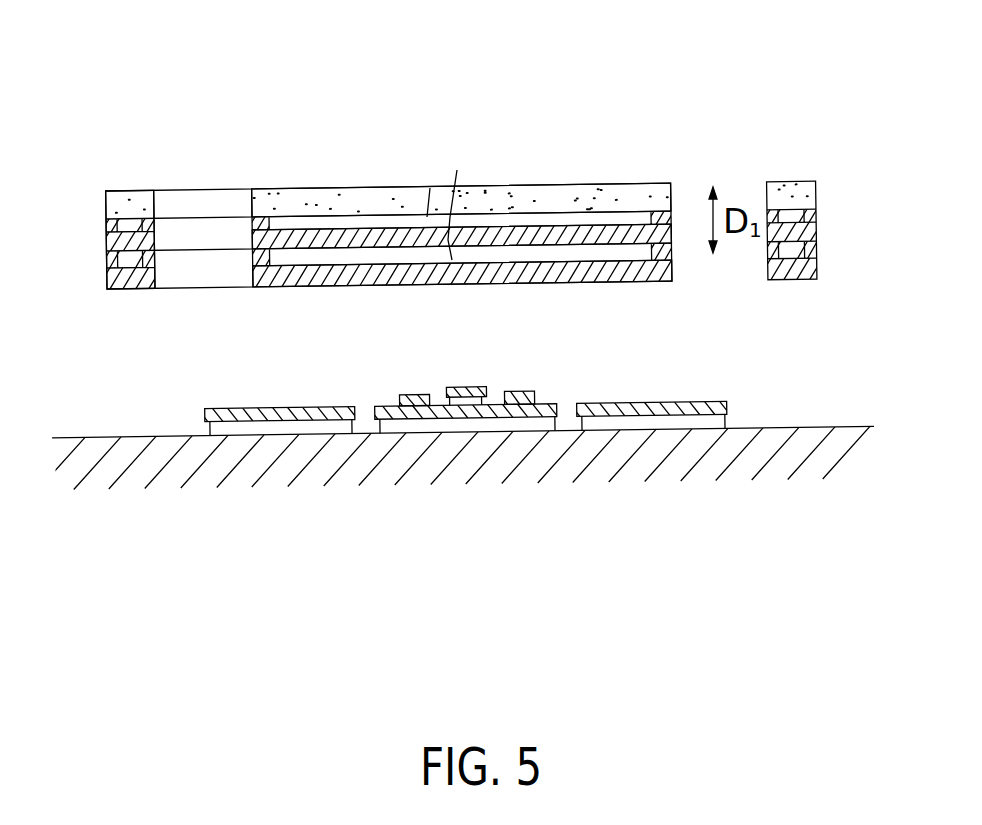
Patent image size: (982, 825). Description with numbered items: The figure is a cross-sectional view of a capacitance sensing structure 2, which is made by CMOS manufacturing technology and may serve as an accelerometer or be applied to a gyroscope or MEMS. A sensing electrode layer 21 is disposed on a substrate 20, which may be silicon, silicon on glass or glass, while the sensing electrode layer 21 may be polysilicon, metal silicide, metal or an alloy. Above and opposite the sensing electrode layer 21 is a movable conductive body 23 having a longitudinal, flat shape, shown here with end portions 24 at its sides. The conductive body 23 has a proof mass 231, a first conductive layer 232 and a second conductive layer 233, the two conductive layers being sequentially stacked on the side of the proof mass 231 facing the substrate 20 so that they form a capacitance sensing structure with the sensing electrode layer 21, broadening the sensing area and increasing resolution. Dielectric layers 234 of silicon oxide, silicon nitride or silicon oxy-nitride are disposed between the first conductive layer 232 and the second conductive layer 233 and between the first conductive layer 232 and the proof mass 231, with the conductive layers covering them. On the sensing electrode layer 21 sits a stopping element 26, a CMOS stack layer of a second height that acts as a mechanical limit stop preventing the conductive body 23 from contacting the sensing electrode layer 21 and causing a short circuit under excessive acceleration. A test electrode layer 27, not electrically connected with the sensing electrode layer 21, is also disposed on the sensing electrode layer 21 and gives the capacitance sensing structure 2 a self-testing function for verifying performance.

The capacitance sensing structure 2 is at (63, 57).
The substrate 20 is at (853, 427).
The sensing electrode layer 21 is at (708, 402).
The conductive body 23 is at (610, 95).
The proof mass 231 is at (570, 187).
The first conductive layer 232 is at (488, 227).
The second conductive layer 233 is at (372, 268).
The dielectric layer 234 is at (457, 170).
The end blocks 24 is at (128, 191).
The stopping element 26 is at (463, 388).
The test electrode layer 27 is at (513, 392).